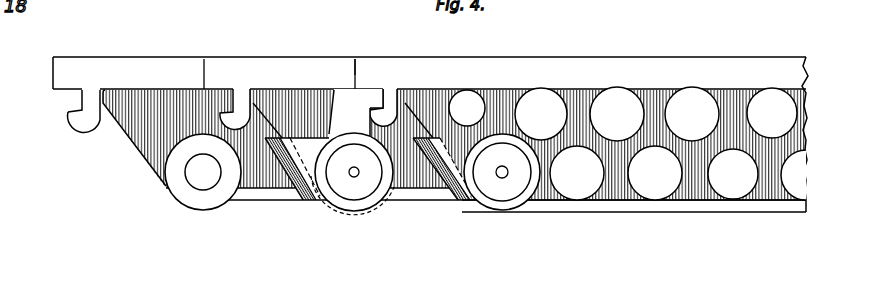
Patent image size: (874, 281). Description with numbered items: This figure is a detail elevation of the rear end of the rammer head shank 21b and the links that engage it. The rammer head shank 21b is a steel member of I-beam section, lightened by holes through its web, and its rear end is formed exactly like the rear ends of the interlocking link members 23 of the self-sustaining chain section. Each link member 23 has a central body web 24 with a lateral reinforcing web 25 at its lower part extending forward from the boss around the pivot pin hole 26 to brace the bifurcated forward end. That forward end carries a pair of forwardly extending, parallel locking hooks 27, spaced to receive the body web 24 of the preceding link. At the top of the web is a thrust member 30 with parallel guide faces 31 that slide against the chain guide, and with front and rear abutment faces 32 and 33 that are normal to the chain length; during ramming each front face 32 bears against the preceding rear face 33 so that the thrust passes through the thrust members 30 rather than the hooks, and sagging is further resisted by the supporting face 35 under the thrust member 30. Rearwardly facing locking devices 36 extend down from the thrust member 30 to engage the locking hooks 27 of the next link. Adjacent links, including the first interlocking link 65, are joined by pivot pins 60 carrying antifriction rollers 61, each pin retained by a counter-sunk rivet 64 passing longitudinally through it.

The thrust member 30 is at (430, 122).
The guide faces 31 is at (217, 63).
The front abutment face 32 is at (355, 62).
The rear abutment face 33 is at (357, 62).
The supporting face 35 is at (65, 92).
The locking devices 36 is at (80, 124).
The locking hooks 27 is at (348, 100).
The body web 24 is at (150, 140).
The link member 23 is at (197, 206).
The pivot pin hole 26 is at (192, 180).
The reinforcing web 25 is at (268, 197).
The counter-sunk rivet 64 is at (352, 176).
The antifriction roller 61 is at (387, 202).
The pivot pin 60 is at (503, 190).
The first interlocking link 65 is at (443, 200).
The rammer head shank 21b is at (690, 203).